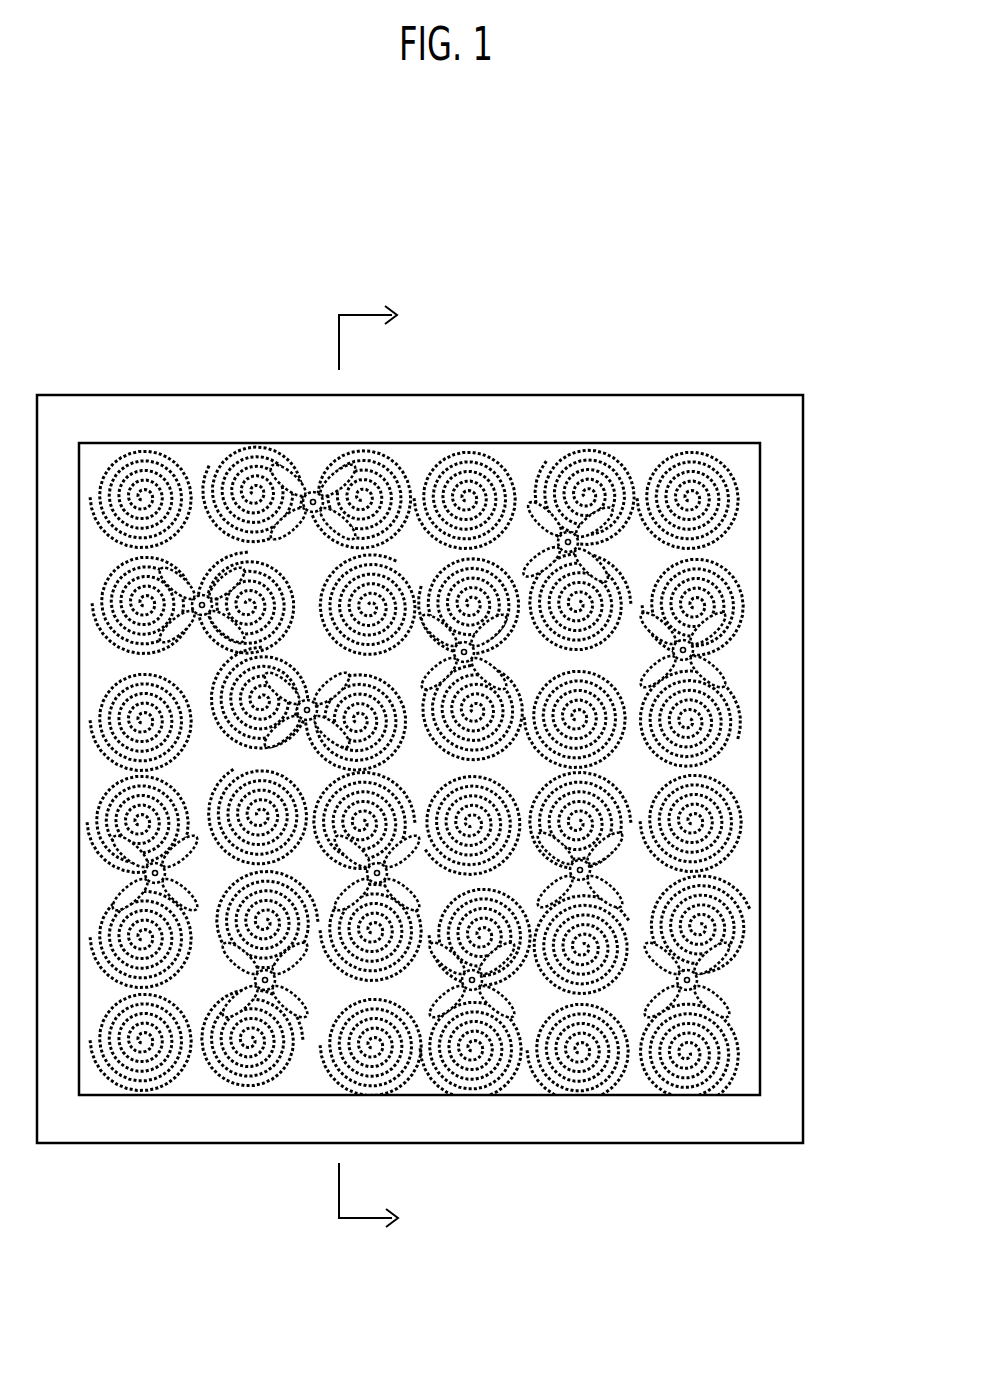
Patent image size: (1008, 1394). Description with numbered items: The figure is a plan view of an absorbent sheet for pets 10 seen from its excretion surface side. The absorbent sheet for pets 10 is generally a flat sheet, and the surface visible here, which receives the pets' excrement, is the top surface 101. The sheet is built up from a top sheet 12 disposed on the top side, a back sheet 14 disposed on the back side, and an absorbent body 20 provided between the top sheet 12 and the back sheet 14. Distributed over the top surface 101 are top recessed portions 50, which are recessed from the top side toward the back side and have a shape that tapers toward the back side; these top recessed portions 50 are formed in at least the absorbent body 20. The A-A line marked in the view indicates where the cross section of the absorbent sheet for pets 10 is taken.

The absorbent sheet for pets 10 is at (727, 368).
The top surface 101 is at (168, 408).
The top sheet 12 is at (760, 577).
The back sheet 14 is at (803, 643).
The absorbent body 20 is at (748, 837).
The top recessed portions 50 is at (722, 778).